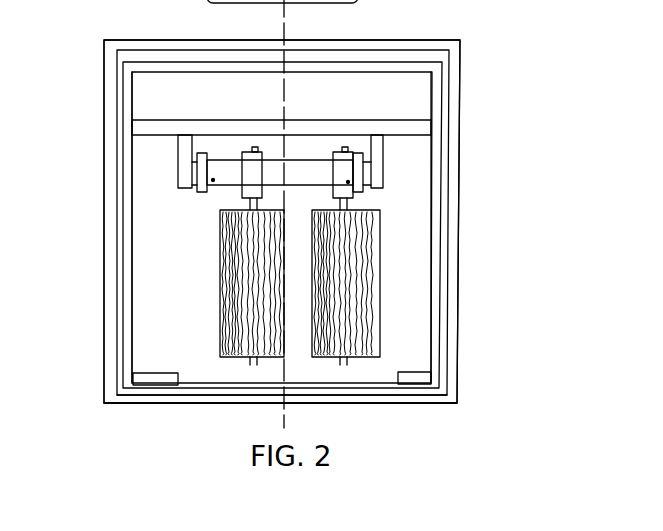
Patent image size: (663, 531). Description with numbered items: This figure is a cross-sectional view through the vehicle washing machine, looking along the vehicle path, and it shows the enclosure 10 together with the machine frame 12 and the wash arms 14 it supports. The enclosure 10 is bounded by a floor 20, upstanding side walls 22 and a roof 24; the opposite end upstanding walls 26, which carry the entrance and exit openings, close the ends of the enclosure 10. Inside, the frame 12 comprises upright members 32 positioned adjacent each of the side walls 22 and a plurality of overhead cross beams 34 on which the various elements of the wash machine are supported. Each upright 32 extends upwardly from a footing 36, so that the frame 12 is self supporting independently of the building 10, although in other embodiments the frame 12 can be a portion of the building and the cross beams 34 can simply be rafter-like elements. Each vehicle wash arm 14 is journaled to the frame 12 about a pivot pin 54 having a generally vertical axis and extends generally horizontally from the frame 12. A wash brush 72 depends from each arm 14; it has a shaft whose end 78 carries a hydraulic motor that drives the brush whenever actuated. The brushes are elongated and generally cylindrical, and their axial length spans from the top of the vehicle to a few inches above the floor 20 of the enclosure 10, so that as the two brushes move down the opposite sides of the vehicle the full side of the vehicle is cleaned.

The outer enclosure 10 is at (480, 130).
The machine frame 12 is at (155, 157).
The vehicle wash arm 14 is at (213, 190).
The floor 20 is at (374, 390).
The upstanding side walls 22 is at (104, 205).
The roof 24 is at (371, 40).
The opposite end upstanding walls 26 is at (420, 264).
The upright members 32 is at (132, 287).
The overhead cross beams 34 is at (157, 72).
The footings 36 is at (143, 373).
The pivot pin 54 is at (208, 153).
The wash brush 72 is at (388, 315).
The shaft end 78 is at (255, 147).